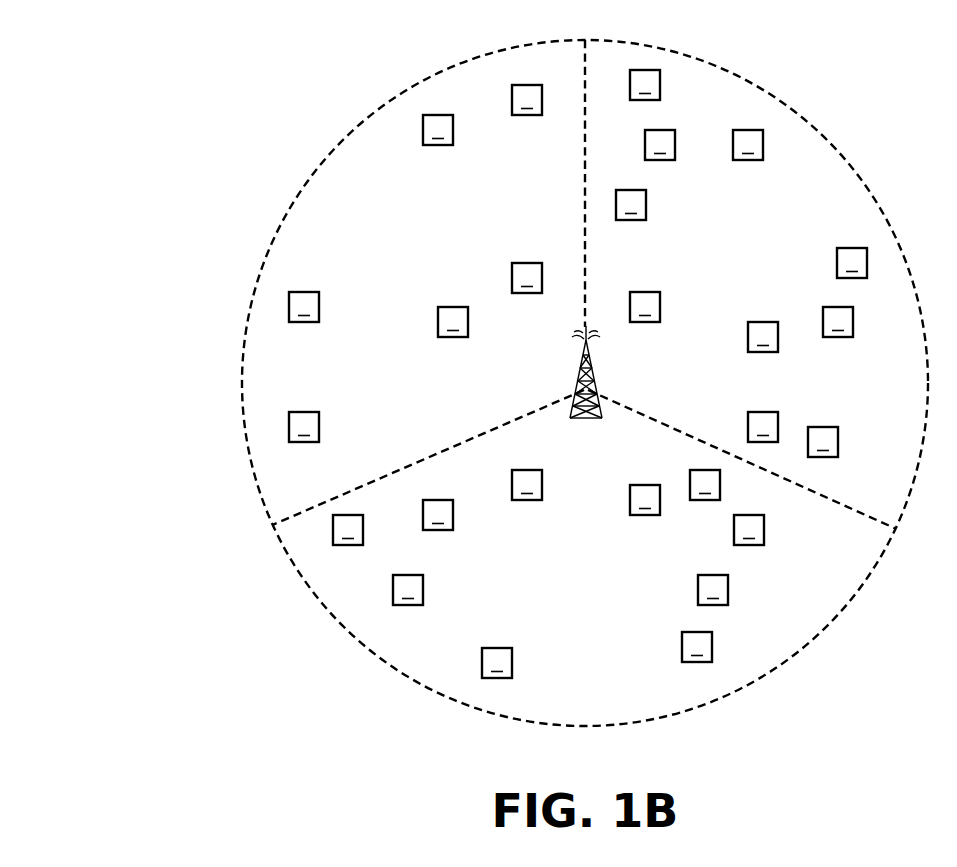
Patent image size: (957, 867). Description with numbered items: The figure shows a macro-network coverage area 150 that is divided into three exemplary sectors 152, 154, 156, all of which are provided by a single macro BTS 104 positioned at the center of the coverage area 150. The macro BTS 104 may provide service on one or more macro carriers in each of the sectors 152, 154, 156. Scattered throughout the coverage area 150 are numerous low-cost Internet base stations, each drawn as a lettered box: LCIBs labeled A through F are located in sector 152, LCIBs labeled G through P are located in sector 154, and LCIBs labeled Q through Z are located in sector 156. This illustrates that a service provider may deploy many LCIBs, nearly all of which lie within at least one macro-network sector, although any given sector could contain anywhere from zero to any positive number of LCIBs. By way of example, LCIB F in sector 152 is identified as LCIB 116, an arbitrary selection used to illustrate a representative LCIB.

The coverage area 150 is at (122, 83).
The sector 152 is at (409, 244).
The sector 154 is at (736, 244).
The sector 156 is at (573, 600).
The macro base transceiver station 104 is at (622, 446).
The low-cost Internet base station 116 is at (289, 423).